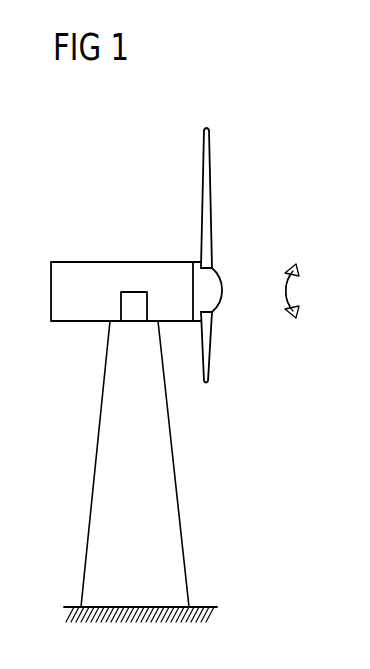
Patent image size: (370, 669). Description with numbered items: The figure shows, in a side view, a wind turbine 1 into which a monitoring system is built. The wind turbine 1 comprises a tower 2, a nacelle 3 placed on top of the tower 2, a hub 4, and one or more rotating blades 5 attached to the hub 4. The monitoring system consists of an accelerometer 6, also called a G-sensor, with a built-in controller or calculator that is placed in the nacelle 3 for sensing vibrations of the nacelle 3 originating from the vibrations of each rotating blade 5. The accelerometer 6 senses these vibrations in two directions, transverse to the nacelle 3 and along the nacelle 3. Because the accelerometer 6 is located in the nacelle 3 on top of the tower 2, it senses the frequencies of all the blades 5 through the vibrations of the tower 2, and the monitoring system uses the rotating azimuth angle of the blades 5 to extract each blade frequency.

The wind turbine 1 is at (90, 178).
The tower 2 is at (172, 503).
The nacelle 3 is at (71, 312).
The hub 4 is at (215, 283).
The rotating blade 5 is at (207, 233).
The accelerometer 6 is at (135, 297).